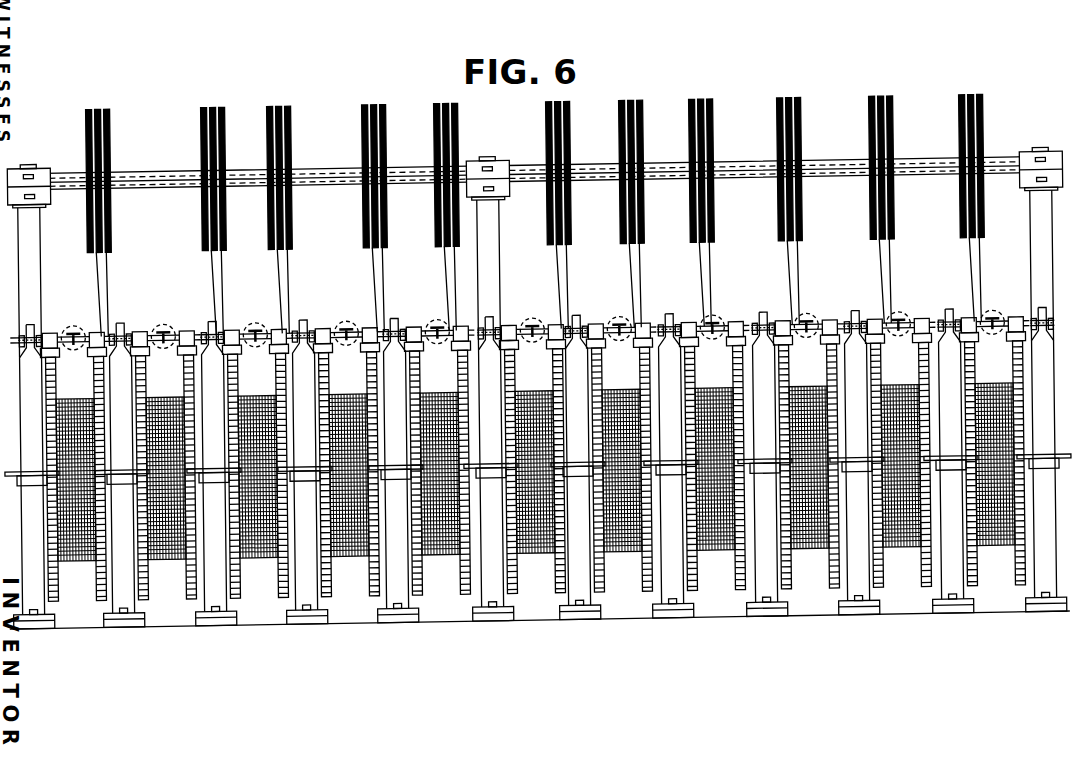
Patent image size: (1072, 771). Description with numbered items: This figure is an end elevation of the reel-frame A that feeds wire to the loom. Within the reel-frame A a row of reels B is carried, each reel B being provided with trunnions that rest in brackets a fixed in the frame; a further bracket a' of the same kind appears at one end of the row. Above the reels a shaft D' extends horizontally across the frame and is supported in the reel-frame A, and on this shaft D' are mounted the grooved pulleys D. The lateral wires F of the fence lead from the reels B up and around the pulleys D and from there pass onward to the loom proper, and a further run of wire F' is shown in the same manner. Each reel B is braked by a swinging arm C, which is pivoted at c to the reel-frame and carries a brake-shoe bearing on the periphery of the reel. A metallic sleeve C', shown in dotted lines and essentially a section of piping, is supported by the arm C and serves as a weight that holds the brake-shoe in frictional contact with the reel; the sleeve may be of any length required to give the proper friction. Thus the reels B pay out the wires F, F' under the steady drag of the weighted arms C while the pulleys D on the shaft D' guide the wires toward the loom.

The grooved pulleys D is at (486, 175).
The shaft D' is at (685, 171).
The lateral wires F is at (648, 285).
The suspension rod F' is at (342, 290).
The reel-frame A is at (496, 263).
The swinging arms C is at (443, 319).
The metallic sleeve C' is at (441, 319).
The pivot c is at (325, 320).
The brackets a is at (904, 475).
The bracket a' is at (31, 484).
The reels B is at (69, 552).